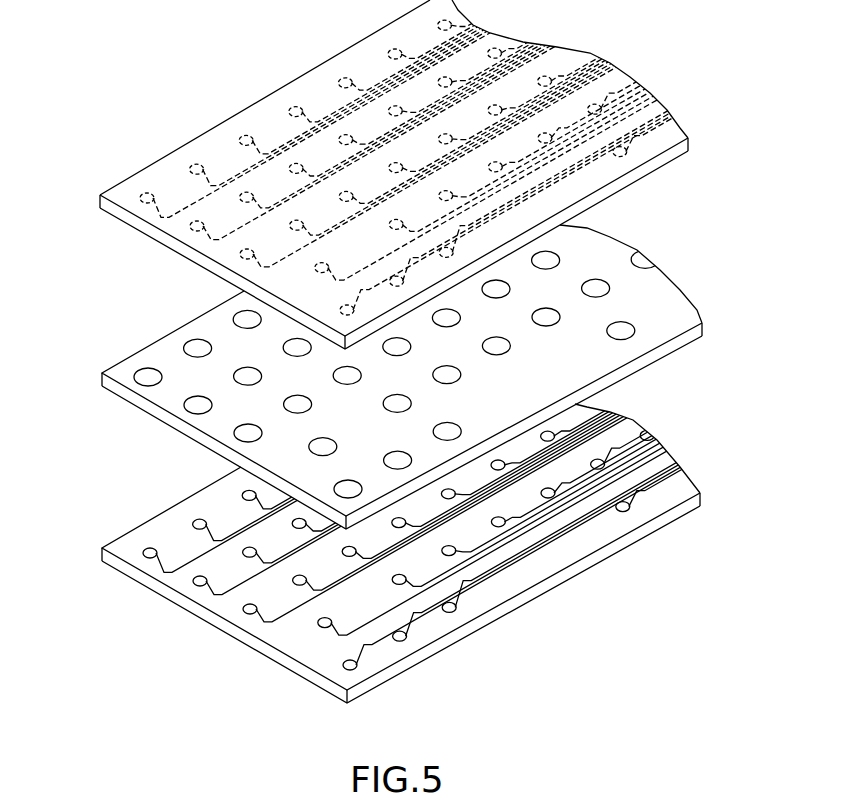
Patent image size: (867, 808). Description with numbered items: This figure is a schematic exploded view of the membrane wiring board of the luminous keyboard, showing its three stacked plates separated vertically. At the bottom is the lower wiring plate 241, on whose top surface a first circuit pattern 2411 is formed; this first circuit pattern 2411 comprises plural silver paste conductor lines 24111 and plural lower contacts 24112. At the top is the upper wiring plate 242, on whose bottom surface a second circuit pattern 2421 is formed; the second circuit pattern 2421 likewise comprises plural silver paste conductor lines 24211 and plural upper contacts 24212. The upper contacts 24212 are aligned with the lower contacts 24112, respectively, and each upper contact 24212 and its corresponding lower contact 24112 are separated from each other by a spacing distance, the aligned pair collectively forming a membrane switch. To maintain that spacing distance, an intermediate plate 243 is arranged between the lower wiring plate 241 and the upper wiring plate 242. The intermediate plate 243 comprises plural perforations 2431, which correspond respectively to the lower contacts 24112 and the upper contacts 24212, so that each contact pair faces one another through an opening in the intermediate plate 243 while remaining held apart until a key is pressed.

The lower wiring plate 241 is at (159, 622).
The first circuit pattern 2411 is at (281, 642).
The silver paste conductor lines 24111 is at (562, 525).
The lower contacts 24112 is at (248, 546).
The upper wiring plate 242 is at (131, 79).
The second circuit pattern 2421 is at (272, 110).
The silver paste conductor lines 24211 is at (662, 102).
The upper contacts 24212 is at (391, 45).
The intermediate plate 243 is at (675, 296).
The perforations 2431 is at (598, 283).